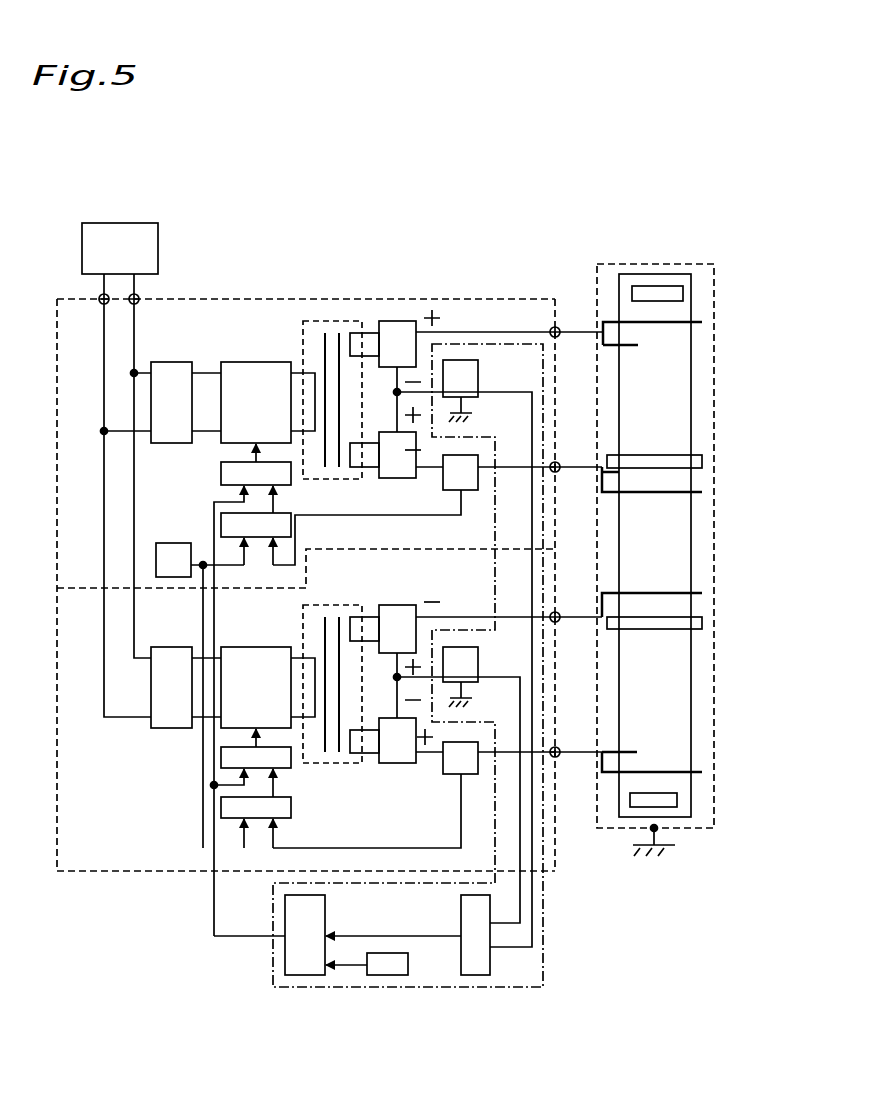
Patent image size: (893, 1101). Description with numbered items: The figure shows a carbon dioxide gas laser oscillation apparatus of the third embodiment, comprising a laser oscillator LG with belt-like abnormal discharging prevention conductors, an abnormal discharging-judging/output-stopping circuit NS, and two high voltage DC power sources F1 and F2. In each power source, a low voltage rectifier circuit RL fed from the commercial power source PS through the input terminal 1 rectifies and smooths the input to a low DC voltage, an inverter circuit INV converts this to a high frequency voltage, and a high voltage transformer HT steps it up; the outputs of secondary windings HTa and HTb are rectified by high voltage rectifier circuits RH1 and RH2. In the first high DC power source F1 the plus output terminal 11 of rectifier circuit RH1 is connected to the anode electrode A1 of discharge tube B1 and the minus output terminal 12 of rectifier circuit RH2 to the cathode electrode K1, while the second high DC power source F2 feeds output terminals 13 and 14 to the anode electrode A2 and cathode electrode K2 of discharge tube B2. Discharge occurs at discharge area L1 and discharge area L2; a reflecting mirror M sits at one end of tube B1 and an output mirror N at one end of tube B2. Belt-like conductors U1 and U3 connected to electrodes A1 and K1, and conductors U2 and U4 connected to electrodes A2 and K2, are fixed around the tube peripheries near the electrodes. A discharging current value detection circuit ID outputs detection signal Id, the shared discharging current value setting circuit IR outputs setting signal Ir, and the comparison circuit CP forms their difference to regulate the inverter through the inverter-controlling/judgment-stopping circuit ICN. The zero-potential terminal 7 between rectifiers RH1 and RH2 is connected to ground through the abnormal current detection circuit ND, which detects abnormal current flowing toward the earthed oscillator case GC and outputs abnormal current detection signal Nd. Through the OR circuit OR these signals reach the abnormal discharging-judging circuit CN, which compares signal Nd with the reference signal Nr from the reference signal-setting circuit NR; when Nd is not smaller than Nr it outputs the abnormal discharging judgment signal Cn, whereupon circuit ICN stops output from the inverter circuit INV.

The commercial power source PS is at (158, 246).
The input terminal 1 is at (140, 296).
The first high DC power source F1 is at (270, 297).
The second high DC power source F2 is at (107, 874).
The low voltage rectifier circuit RL is at (174, 362).
The inverter circuit INV is at (268, 362).
The high voltage transformer HT is at (318, 320).
The secondary winding HTa is at (354, 352).
The secondary winding HTb is at (373, 465).
The high voltage rectifier circuit RH1 is at (413, 321).
The high voltage rectifier circuit RH2 is at (408, 478).
The zero-potential terminal 7 is at (397, 392).
The abnormal current detection circuit ND is at (478, 368).
The discharging current value detection circuit ID is at (478, 470).
The inverter-controlling/judgment-stopping circuit ICN is at (221, 472).
The discharging current value comparison circuit CP is at (221, 522).
The discharging current value setting circuit IR is at (156, 565).
The discharging current value setting signal Ir is at (244, 575).
The discharging current value detection signal Id is at (303, 522).
The plus output terminal 11 is at (558, 328).
The minus output terminal 12 is at (558, 462).
The output terminal 13 is at (558, 612).
The output terminal 14 is at (558, 746).
The laser oscillator LG is at (624, 246).
The oscillator case GC is at (665, 262).
The reflecting mirror M is at (683, 293).
The output mirror N is at (677, 800).
The belt-like conductor U1 is at (700, 324).
The belt-like conductor U2 is at (700, 771).
The belt-like conductor U3 is at (700, 490).
The belt-like conductor U4 is at (700, 592).
The anode electrode A1 is at (655, 351).
The anode electrode A2 is at (652, 744).
The discharge tube B1 is at (691, 393).
The discharge tube B2 is at (691, 681).
The cathode electrode K1 is at (702, 458).
The cathode electrode K2 is at (702, 622).
The discharge area L1 is at (658, 386).
The discharge area L2 is at (658, 676).
The abnormal discharging-judging/output-stopping circuit NS is at (548, 977).
The abnormal discharging-judging circuit CN is at (325, 898).
The abnormal discharging judgment signal Cn is at (240, 938).
The OR circuit OR is at (477, 975).
The abnormal discharging judgment reference signal-setting circuit NR is at (377, 975).
The abnormal discharging judgment reference signal Nr is at (307, 975).
The abnormal current detection signal Nd is at (520, 902).